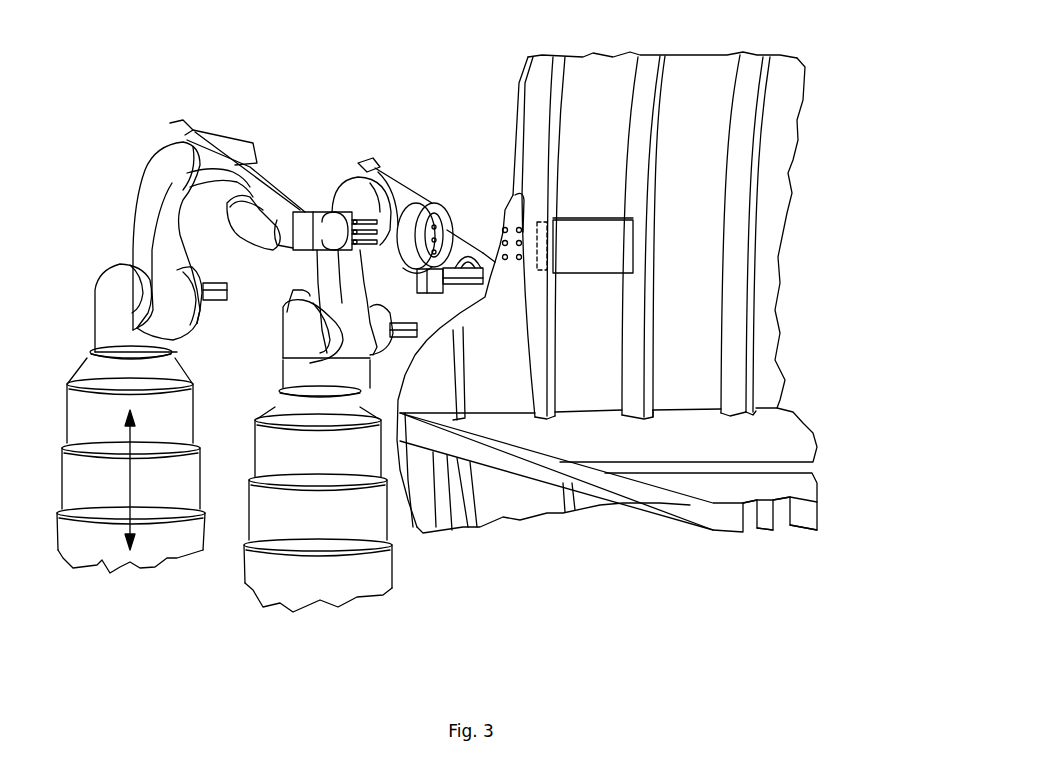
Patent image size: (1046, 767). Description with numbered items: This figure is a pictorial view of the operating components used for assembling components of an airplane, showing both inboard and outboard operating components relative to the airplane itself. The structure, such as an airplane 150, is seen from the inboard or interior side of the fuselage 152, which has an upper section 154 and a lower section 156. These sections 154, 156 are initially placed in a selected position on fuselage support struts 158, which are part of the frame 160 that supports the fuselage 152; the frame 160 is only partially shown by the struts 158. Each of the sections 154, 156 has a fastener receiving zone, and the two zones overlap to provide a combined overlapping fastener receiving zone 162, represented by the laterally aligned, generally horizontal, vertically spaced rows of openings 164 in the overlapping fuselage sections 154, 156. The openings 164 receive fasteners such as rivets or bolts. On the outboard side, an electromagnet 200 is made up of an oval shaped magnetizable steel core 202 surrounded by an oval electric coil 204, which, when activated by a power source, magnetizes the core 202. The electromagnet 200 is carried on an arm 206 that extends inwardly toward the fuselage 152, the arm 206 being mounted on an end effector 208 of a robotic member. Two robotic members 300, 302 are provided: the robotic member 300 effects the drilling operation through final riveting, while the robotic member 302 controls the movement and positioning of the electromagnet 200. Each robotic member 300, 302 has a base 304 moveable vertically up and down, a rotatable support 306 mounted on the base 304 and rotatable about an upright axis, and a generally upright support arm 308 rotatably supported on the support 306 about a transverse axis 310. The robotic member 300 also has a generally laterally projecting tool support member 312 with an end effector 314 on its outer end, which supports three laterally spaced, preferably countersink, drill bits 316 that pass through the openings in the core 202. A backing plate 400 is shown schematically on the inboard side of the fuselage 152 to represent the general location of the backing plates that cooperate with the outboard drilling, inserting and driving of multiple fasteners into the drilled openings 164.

The airplane structure 150 is at (795, 171).
The fuselage 152 is at (780, 317).
The upper section 154 is at (520, 98).
The lower section 156 is at (417, 513).
The fuselage support struts 158 is at (657, 57).
The frame 160 is at (554, 42).
The combined overlapping fastener receiving zone 162 is at (503, 215).
The openings 164 is at (503, 206).
The electromagnet 200 is at (438, 202).
The core 202 is at (440, 213).
The electric coil 204 is at (413, 269).
The arm 206 is at (460, 285).
The end effector 208 is at (480, 247).
The robotic member 300 is at (92, 268).
The robotic member 302 is at (303, 256).
The base 304 is at (103, 564).
The rotatable support 306 is at (275, 407).
The upright support arm 308 is at (137, 176).
The transverse axis 310 is at (222, 296).
The tool support member 312 is at (293, 212).
The end effector 314 is at (300, 212).
The drill bits 316 is at (347, 212).
The backing plate 400 is at (585, 245).